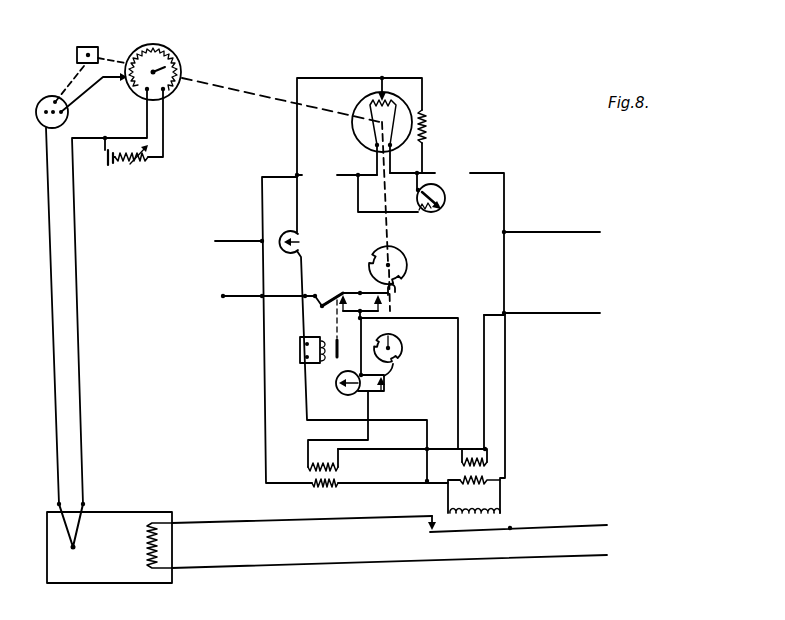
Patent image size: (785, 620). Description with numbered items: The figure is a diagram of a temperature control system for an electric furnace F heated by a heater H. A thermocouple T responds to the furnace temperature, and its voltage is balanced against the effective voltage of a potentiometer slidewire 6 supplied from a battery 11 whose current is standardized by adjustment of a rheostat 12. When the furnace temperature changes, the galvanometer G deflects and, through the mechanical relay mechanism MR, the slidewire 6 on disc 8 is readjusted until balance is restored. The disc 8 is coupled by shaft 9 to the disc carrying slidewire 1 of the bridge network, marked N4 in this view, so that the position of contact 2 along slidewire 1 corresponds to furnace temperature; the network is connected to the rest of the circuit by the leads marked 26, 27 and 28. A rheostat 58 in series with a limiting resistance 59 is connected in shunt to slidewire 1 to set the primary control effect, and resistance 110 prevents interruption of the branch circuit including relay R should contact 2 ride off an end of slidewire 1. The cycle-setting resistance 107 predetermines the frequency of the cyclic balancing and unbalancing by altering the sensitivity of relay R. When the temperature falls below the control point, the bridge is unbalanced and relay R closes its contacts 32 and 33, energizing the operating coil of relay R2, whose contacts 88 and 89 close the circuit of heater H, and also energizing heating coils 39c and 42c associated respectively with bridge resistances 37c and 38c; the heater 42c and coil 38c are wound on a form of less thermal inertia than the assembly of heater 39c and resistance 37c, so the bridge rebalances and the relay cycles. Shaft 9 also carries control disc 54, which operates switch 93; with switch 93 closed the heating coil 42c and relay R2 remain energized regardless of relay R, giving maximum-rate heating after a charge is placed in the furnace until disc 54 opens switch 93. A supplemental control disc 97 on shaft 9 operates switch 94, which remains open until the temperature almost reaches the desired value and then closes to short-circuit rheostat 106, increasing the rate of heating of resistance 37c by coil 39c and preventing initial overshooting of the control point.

The mechanical relay mechanism MR is at (88, 47).
The galvanometer G is at (36, 109).
The potentiometer slidewire 6 is at (168, 51).
The disc 8 is at (181, 65).
The shaft 9 is at (247, 95).
The battery 11 is at (107, 167).
The rheostat 12 is at (141, 165).
The control network N4 is at (242, 200).
The contact 2 is at (388, 75).
The slidewire 1 is at (399, 103).
The resistance 110 is at (428, 122).
The rheostat 58 is at (445, 197).
The limiting resistance 59 is at (427, 207).
The supply lead 27 is at (508, 231).
The cycle-setting resistance 107 is at (281, 226).
The supply lead 26 is at (258, 240).
The supply lead 28 is at (248, 295).
The contact of relay R 32 is at (316, 292).
The switch 93 is at (384, 291).
The control disc 54 is at (406, 264).
The contact of relay R 33 is at (347, 328).
The relay R is at (299, 350).
The supplemental control disc 97 is at (403, 348).
The switch 94 is at (393, 373).
The rheostat 106 is at (340, 390).
The heater 42c is at (476, 457).
The heater 39c is at (340, 466).
The resistance 37c is at (335, 486).
The resistance 38c is at (470, 480).
The relay R2 is at (500, 513).
The contact of relay R2 89 is at (405, 518).
The contact of relay R2 88 is at (487, 530).
The furnace F is at (103, 525).
The thermocouple T is at (68, 538).
The heater H is at (162, 538).